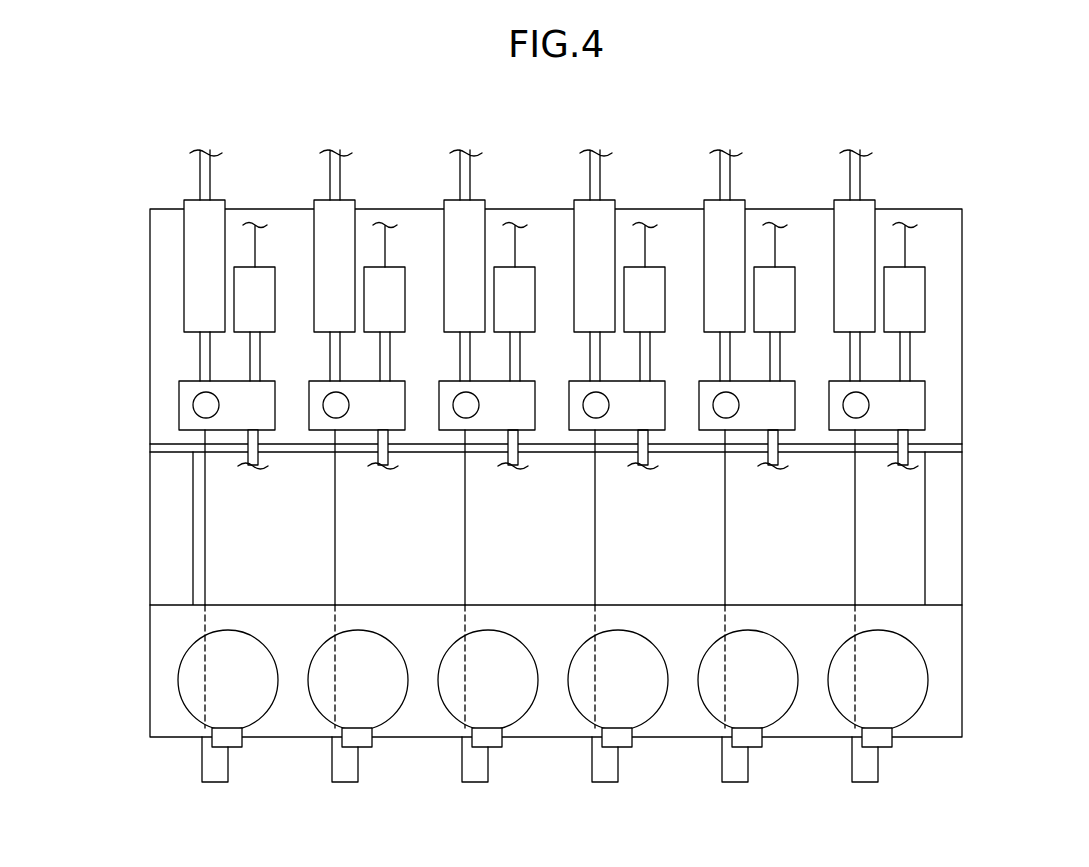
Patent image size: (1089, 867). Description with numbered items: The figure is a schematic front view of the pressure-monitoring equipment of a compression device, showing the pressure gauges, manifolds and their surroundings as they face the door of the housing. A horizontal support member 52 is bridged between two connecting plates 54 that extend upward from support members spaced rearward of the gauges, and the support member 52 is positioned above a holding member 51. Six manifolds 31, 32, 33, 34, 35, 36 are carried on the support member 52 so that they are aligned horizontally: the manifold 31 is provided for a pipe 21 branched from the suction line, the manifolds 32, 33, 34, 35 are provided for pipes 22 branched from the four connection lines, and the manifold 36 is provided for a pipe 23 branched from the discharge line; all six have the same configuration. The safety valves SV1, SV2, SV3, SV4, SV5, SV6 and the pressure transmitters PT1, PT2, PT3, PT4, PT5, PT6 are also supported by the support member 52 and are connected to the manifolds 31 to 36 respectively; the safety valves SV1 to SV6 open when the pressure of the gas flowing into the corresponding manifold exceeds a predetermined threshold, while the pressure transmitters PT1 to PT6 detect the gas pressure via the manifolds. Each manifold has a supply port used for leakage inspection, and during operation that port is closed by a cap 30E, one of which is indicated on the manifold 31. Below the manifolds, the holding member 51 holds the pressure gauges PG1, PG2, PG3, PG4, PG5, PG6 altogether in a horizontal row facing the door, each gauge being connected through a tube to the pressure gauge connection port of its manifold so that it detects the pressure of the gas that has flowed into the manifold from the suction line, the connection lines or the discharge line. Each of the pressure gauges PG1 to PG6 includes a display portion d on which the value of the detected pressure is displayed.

The support member 52 is at (165, 260).
The connecting plate 54 is at (160, 517).
The holding member 51 is at (165, 652).
The cap 30E is at (200, 405).
The manifold 31 is at (196, 381).
The manifold 32 is at (326, 381).
The manifold 33 is at (456, 381).
The manifold 34 is at (586, 381).
The manifold 35 is at (716, 381).
The manifold 36 is at (846, 381).
The pipe 21 is at (266, 463).
The pipe 22 is at (396, 463).
The pipe 23 is at (893, 463).
The safety valve SV1 is at (185, 198).
The safety valve SV2 is at (315, 198).
The safety valve SV3 is at (445, 198).
The safety valve SV4 is at (575, 198).
The safety valve SV5 is at (705, 198).
The safety valve SV6 is at (835, 198).
The pressure transmitter PT1 is at (276, 267).
The pressure transmitter PT2 is at (406, 267).
The pressure transmitter PT3 is at (536, 267).
The pressure transmitter PT4 is at (666, 267).
The pressure transmitter PT5 is at (796, 267).
The pressure transmitter PT6 is at (926, 267).
The pressure gauge PG1 is at (237, 630).
The pressure gauge PG2 is at (367, 630).
The pressure gauge PG3 is at (497, 630).
The pressure gauge PG4 is at (627, 630).
The pressure gauge PG5 is at (757, 630).
The pressure gauge PG6 is at (887, 630).
The display portion d is at (768, 705).